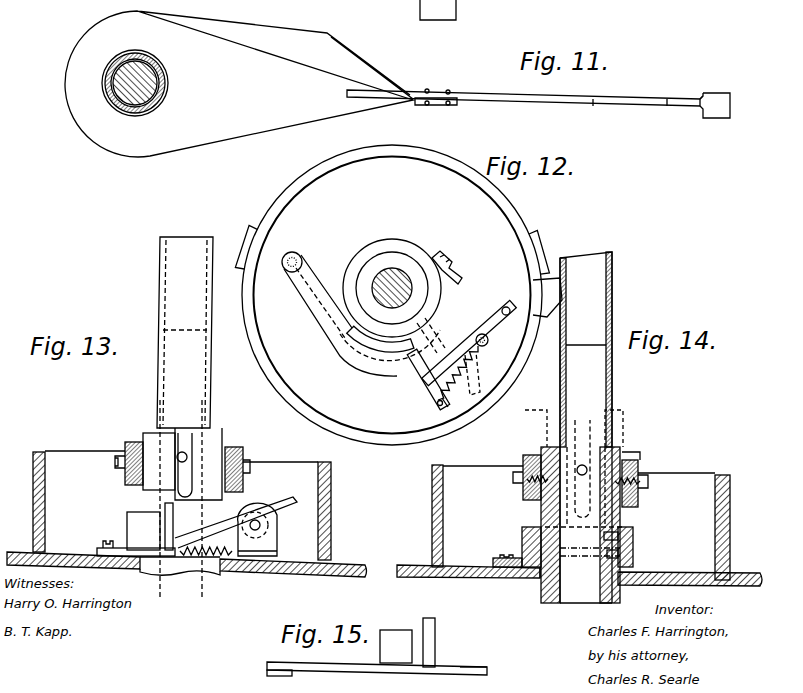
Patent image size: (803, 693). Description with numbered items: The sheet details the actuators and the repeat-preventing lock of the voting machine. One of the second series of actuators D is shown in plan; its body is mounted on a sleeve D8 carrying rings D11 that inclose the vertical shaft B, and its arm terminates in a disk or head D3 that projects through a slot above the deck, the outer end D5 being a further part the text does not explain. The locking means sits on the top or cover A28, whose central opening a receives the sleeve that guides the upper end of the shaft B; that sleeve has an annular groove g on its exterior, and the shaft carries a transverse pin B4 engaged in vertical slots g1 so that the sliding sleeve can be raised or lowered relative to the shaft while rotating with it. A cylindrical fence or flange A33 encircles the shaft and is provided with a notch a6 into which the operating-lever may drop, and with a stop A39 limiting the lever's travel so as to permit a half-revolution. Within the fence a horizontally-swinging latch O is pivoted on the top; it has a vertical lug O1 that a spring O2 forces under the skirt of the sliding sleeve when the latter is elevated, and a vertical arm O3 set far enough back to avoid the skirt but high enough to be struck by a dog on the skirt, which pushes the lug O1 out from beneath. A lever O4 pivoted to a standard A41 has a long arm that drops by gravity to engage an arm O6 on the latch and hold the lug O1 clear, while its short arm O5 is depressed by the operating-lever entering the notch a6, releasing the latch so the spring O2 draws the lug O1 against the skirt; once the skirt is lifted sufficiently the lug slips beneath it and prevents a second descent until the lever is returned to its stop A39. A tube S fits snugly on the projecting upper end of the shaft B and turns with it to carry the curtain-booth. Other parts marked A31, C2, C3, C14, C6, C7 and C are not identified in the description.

In FIG. 11, the second series of actuators D is at (382, 84).
In FIG. 11, the rings D11 is at (161, 77).
In FIG. 11, the sleeve D8 is at (158, 107).
In FIG. 11, the vertical shaft B is at (158, 92).
In FIG. 12, the vertical shaft B is at (373, 288).
In FIG. 13, the vertical shaft B is at (213, 432).
In FIG. 14, the vertical shaft B is at (585, 488).
In FIG. 11, the disk or head D3 is at (669, 100).
In FIG. 11, the rod head D5 is at (730, 106).
In FIG. 12, the cylindrical fence or flange A33 is at (287, 194).
In FIG. 14, the cylindrical fence or flange A33 is at (400, 495).
In FIG. 12, the stop A39 is at (245, 240).
In FIG. 12, the casing lug A31 is at (545, 252).
In FIG. 12, the notch a6 is at (547, 297).
In FIG. 12, the collar C2 is at (372, 251).
In FIG. 14, the collar C2 is at (635, 552).
In FIG. 12, the collar flange C3 is at (404, 263).
In FIG. 14, the collar flange C3 is at (624, 453).
In FIG. 12, the pawl C14 is at (460, 277).
In FIG. 12, the horizontally-swinging latch O is at (340, 358).
In FIG. 13, the horizontally-swinging latch O is at (100, 547).
In FIG. 14, the horizontally-swinging latch O is at (493, 563).
In FIG. 15, the horizontally-swinging latch O is at (338, 668).
In FIG. 12, the vertical lug O1 is at (383, 352).
In FIG. 13, the vertical lug O1 is at (128, 522).
In FIG. 14, the vertical lug O1 is at (523, 532).
In FIG. 15, the vertical lug O1 is at (393, 633).
In FIG. 12, the vertical arm O3 is at (419, 370).
In FIG. 13, the vertical arm O3 is at (165, 512).
In FIG. 15, the vertical arm O3 is at (430, 623).
In FIG. 12, the lever O4 is at (464, 333).
In FIG. 13, the lever O4 is at (193, 535).
In FIG. 12, the short arm O5 is at (510, 300).
In FIG. 13, the short arm O5 is at (273, 505).
In FIG. 12, the standard A41 is at (492, 305).
In FIG. 13, the standard A41 is at (270, 530).
In FIG. 12, the spring O2 is at (470, 373).
In FIG. 13, the spring O2 is at (208, 560).
In FIG. 12, the arm O6 is at (462, 396).
In FIG. 13, the arm O6 is at (173, 565).
In FIG. 15, the arm O6 is at (470, 672).
In FIG. 13, the tube S is at (160, 275).
In FIG. 14, the tube S is at (586, 349).
In FIG. 13, the vertical slots g1 is at (147, 429).
In FIG. 13, the transverse pin B4 is at (187, 453).
In FIG. 14, the transverse pin B4 is at (586, 466).
In FIG. 13, the clamp block C6 is at (118, 455).
In FIG. 14, the clamp block C6 is at (518, 472).
In FIG. 13, the clamp screw C7 is at (124, 475).
In FIG. 14, the clamp screw C7 is at (523, 493).
In FIG. 13, the top or cover A28 is at (345, 565).
In FIG. 13, the collar cylinder C is at (222, 577).
In FIG. 14, the collar cylinder C is at (538, 600).
In FIG. 14, the opening a is at (538, 580).
In FIG. 14, the annular groove g is at (634, 537).